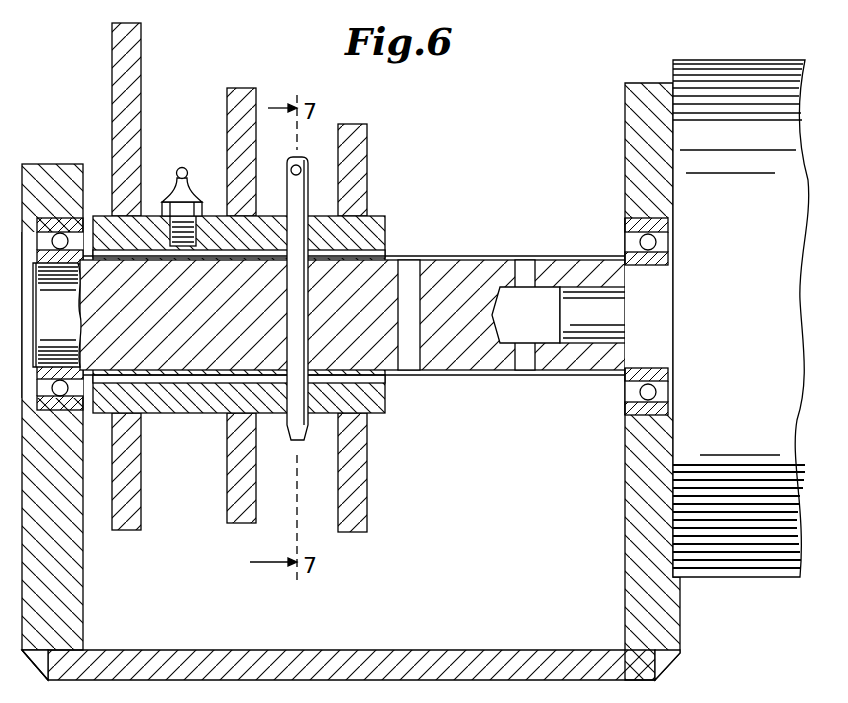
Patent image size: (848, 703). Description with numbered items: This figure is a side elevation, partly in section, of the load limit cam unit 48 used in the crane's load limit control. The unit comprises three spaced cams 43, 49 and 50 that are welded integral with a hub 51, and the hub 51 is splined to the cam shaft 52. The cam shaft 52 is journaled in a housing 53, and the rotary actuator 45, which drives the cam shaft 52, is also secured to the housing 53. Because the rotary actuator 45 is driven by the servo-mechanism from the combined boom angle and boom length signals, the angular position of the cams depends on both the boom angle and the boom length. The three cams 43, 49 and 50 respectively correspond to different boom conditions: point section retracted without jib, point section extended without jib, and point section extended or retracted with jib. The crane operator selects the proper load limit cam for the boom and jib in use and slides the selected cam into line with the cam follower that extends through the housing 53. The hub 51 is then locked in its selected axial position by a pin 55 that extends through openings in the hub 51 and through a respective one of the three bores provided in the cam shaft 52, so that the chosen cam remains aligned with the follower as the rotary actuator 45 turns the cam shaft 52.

The load limit cam 43 is at (131, 39).
The rotary actuator 45 is at (690, 72).
The load limit cam unit 48 is at (499, 143).
The cam 49 is at (250, 88).
The cam 50 is at (367, 124).
The hub 51 is at (385, 228).
The cam shaft 52 is at (487, 262).
The housing 53 is at (670, 631).
The pin 55 is at (300, 430).